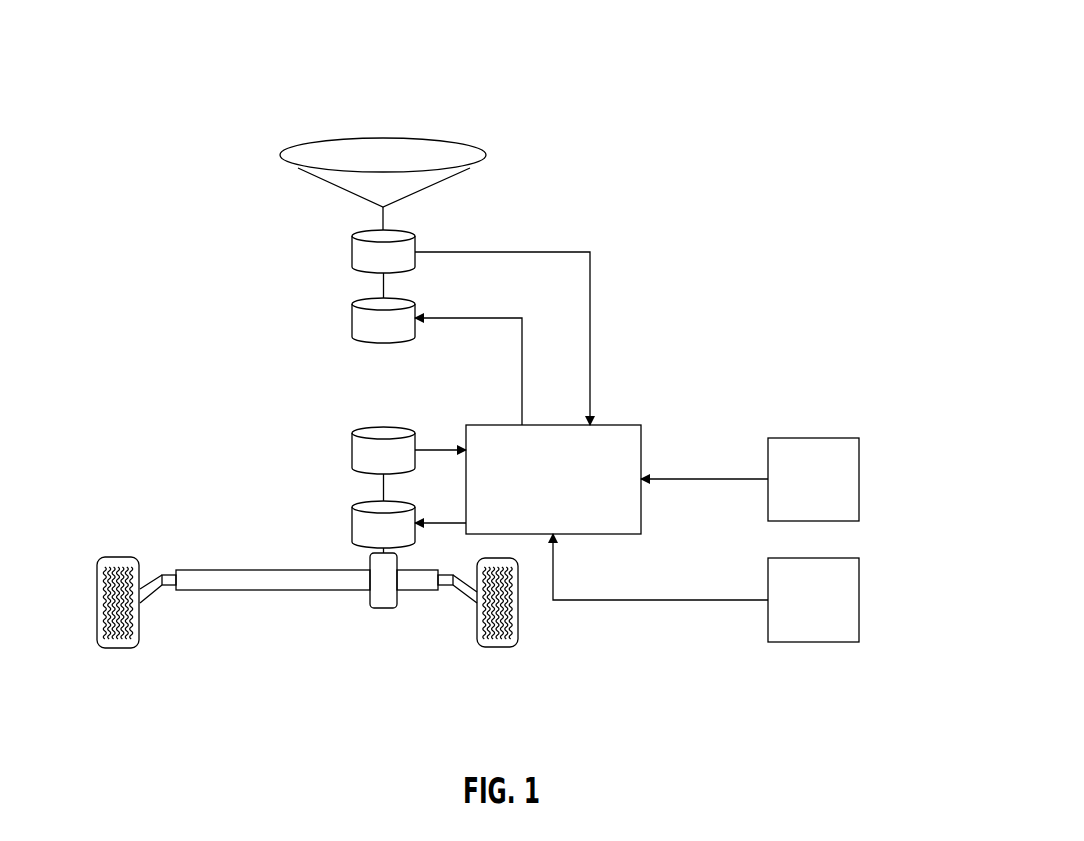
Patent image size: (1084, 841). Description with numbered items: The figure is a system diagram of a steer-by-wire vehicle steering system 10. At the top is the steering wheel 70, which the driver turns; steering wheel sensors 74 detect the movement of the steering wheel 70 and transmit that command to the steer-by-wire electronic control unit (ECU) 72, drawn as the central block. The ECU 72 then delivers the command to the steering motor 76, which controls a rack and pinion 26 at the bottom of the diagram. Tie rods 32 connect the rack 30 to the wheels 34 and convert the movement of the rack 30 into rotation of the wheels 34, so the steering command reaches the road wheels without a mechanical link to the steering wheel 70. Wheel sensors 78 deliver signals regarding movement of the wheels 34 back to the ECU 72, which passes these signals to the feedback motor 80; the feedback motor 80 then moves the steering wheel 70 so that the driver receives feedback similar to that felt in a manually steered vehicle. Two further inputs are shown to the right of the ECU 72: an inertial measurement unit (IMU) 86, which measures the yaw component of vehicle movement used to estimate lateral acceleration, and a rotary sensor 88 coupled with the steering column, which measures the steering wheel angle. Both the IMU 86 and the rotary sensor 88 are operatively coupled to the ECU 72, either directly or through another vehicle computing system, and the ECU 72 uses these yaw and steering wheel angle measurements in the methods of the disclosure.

The by-wire steering system 10 is at (181, 30).
The rack and pinion 26 is at (397, 627).
The rack 30 is at (228, 590).
The tie rods 32 is at (155, 573).
The wheels 34 is at (503, 647).
The steering wheel 70 is at (315, 141).
The steer-by-wire electronic control unit (ECU) 72 is at (628, 425).
The steering wheel sensors 74 is at (367, 229).
The steering motor 76 is at (366, 501).
The wheel sensors 78 is at (366, 427).
The feedback motor 80 is at (367, 297).
The inertial measurement unit (IMU) 86 is at (840, 438).
The rotary sensor 88 is at (840, 558).